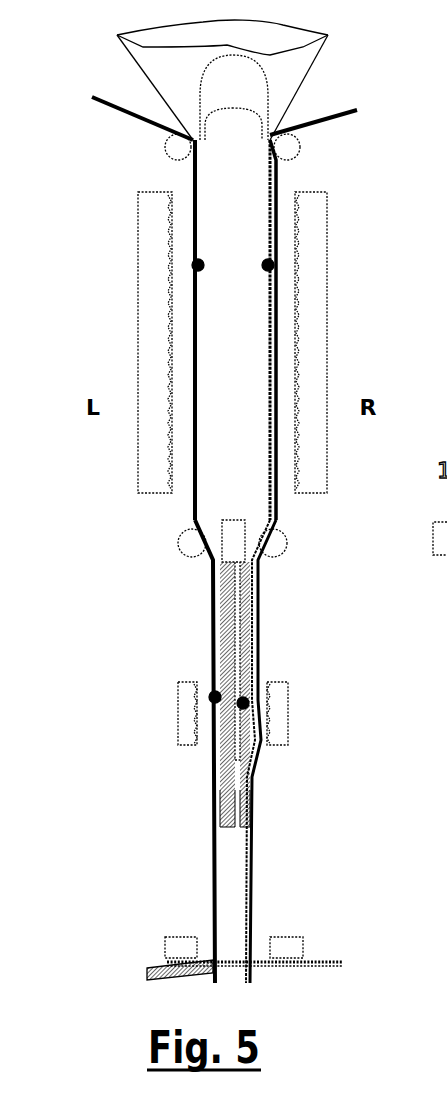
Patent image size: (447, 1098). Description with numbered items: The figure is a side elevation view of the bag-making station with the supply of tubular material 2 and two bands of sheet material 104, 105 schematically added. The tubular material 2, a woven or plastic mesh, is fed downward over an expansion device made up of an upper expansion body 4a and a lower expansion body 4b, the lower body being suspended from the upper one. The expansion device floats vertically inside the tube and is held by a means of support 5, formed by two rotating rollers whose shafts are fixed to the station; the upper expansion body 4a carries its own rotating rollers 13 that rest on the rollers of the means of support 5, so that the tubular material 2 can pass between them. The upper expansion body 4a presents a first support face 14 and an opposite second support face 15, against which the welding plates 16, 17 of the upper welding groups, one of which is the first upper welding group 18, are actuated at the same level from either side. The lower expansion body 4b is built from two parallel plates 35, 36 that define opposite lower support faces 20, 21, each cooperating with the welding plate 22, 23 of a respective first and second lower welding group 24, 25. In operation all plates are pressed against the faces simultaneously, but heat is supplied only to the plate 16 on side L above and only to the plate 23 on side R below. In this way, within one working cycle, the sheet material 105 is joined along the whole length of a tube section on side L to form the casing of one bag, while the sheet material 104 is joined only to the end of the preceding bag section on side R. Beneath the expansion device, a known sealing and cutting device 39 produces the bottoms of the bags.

The tubular material 2 is at (140, 68).
The band of sheet material 105 is at (115, 110).
The band of sheet material 104 is at (343, 115).
The upper expansion body 4a is at (213, 326).
The first upper support face 14 is at (196, 263).
The second upper support face 15 is at (270, 263).
The first upper welding group 18 is at (148, 282).
The welding plate 16 is at (187, 339).
The welding plate 17 is at (287, 339).
The rotating rollers 13 is at (197, 527).
The means of support 5 is at (177, 547).
The lower expansion body 4b is at (225, 640).
The first lower support face 20 is at (212, 694).
The second lower support face 21 is at (246, 700).
The first lower welding group 24 is at (190, 708).
The second lower welding group 25 is at (280, 710).
The welding plate 22 is at (205, 723).
The welding plate 23 is at (262, 723).
The parallel plate 35 is at (225, 797).
The parallel plate 36 is at (247, 797).
The sealing and cutting device 39 is at (165, 957).